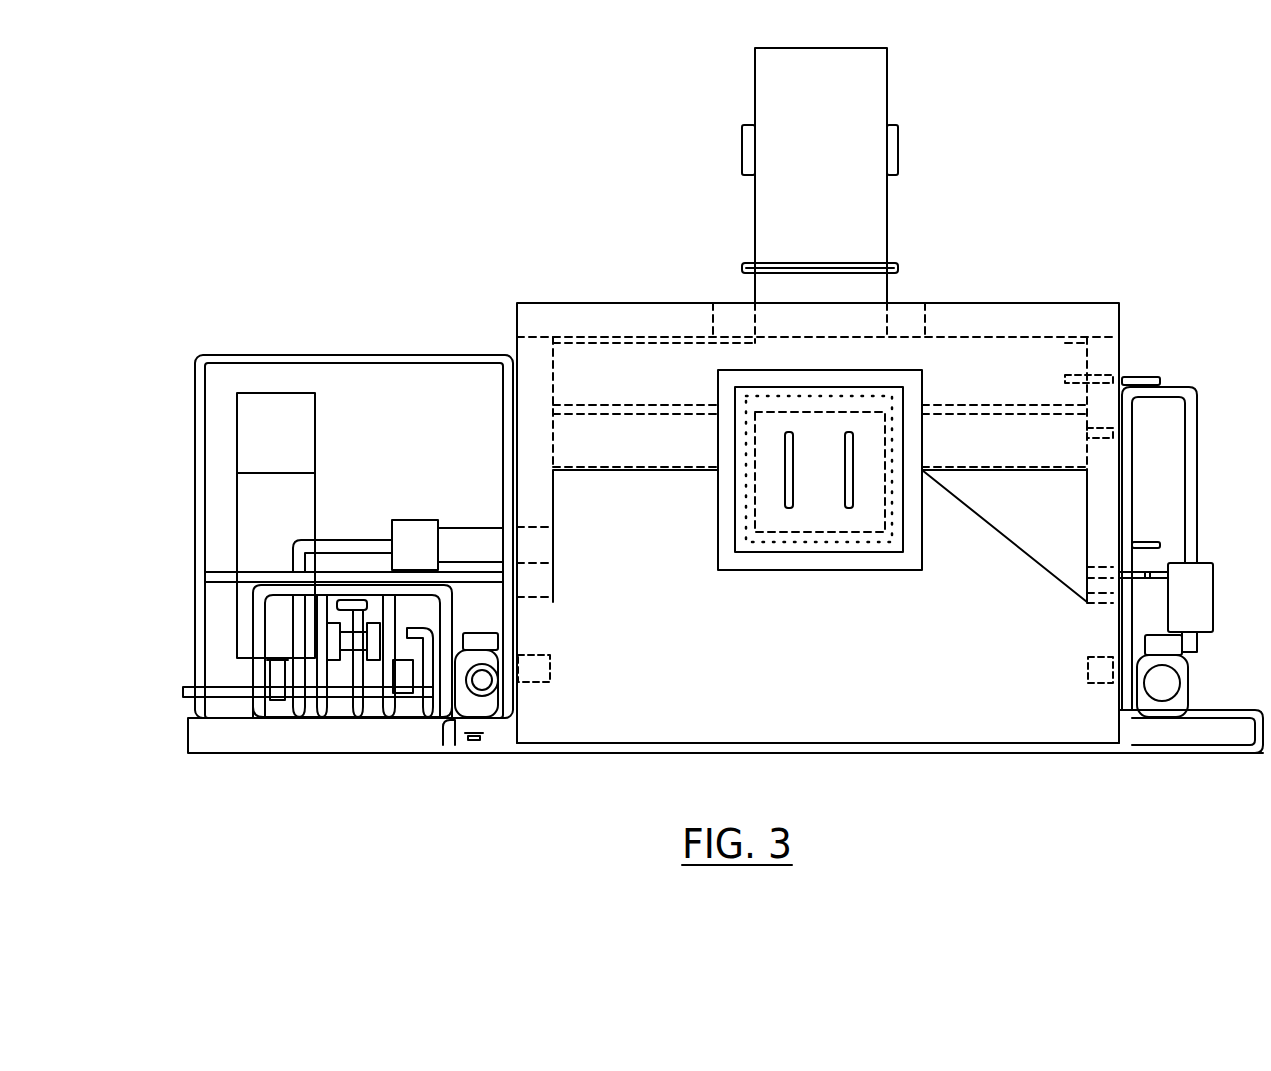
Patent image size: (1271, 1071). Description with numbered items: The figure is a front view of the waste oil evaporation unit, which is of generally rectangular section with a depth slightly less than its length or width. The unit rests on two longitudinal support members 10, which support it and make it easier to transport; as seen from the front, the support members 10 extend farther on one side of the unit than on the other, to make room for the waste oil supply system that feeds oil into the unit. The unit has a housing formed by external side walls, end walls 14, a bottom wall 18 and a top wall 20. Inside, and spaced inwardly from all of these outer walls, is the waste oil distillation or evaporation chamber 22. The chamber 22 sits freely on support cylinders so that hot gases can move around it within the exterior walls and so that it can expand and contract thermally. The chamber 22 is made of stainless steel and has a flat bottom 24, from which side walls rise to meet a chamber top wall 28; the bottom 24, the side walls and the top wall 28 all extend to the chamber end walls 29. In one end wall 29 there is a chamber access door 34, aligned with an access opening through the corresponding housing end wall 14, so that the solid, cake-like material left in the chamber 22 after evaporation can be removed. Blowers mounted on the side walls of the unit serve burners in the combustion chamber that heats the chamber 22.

The longitudinal support member 10 is at (410, 757).
The end wall 14 is at (962, 722).
The bottom wall 18 is at (698, 743).
The top wall 20 is at (995, 302).
The waste oil distillation or evaporation chamber 22 is at (1068, 365).
The flat bottom 24 is at (987, 602).
The top wall 28 is at (655, 318).
The chamber end wall 29 is at (583, 357).
The chamber access door 34 is at (828, 552).